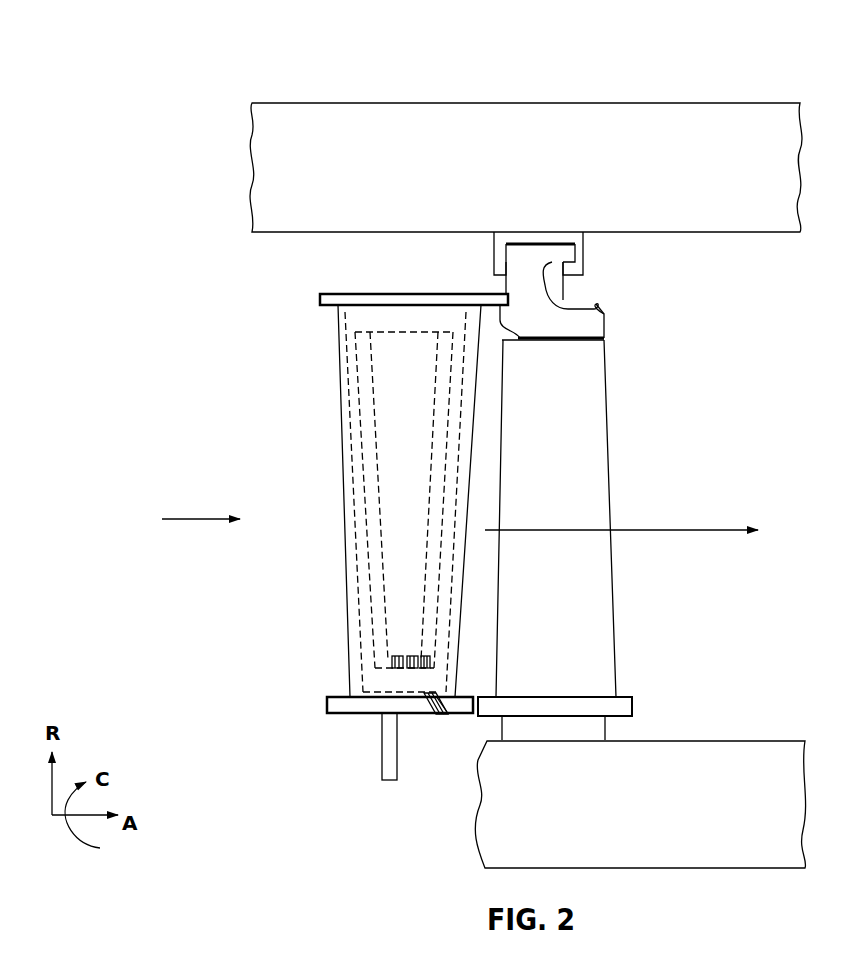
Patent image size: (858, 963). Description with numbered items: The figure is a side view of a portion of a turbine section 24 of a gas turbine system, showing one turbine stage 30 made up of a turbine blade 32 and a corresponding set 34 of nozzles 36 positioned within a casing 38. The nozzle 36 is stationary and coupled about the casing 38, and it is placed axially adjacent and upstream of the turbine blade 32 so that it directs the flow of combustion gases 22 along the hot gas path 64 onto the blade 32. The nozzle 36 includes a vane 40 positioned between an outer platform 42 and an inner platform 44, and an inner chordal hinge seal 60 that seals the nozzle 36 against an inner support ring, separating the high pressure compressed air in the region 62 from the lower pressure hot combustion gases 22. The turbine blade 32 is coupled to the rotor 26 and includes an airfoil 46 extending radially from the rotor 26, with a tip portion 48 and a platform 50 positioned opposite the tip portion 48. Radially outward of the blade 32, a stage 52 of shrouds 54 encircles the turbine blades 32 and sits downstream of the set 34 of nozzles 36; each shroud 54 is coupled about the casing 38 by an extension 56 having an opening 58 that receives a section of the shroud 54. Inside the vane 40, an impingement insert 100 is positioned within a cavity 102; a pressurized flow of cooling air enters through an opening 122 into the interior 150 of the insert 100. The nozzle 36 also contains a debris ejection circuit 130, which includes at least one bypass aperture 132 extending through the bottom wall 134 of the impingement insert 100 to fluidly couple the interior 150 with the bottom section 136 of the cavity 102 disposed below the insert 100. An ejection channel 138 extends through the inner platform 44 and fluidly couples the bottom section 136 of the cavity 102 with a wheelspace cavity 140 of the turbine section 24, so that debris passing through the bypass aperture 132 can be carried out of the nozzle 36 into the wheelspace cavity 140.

The combustion gases 22 is at (197, 518).
The turbine section 24 is at (447, 90).
The rotor 26 is at (676, 868).
The turbine stage 30 is at (642, 590).
The turbine blade 32 is at (618, 508).
The set of nozzles 34 is at (327, 490).
The nozzle 36 is at (340, 540).
The casing 38 is at (692, 102).
The vane 40 is at (338, 425).
The outer platform 42 is at (320, 300).
The inner platform 44 is at (327, 705).
The airfoil 46 is at (607, 440).
The tip portion 48 is at (609, 345).
The platform 50 is at (632, 700).
The stage of shrouds 52 is at (616, 270).
The shroud 54 is at (605, 327).
The extension 56 is at (590, 243).
The opening 58 is at (548, 238).
The inner chordal hinge seal 60 is at (382, 748).
The region 62 is at (311, 810).
The hot gas path 64 is at (695, 530).
The impingement insert 100 is at (443, 410).
The cavity 102 is at (345, 357).
The opening 122 is at (393, 321).
The debris ejection circuit 130 is at (465, 682).
The bypass aperture 132 is at (405, 650).
The bottom wall 134 is at (427, 660).
The bottom section 136 is at (378, 685).
The ejection channel 138 is at (438, 722).
The wheelspace cavity 140 is at (463, 762).
The interior 150 is at (428, 387).